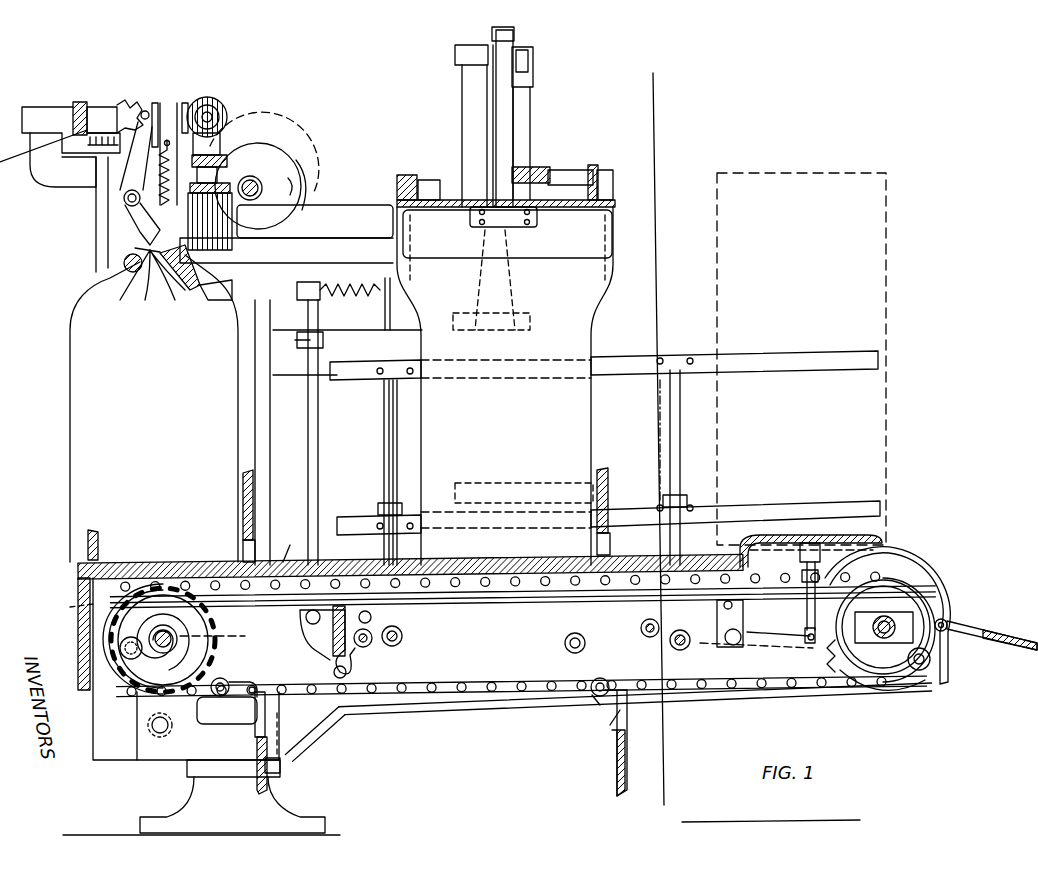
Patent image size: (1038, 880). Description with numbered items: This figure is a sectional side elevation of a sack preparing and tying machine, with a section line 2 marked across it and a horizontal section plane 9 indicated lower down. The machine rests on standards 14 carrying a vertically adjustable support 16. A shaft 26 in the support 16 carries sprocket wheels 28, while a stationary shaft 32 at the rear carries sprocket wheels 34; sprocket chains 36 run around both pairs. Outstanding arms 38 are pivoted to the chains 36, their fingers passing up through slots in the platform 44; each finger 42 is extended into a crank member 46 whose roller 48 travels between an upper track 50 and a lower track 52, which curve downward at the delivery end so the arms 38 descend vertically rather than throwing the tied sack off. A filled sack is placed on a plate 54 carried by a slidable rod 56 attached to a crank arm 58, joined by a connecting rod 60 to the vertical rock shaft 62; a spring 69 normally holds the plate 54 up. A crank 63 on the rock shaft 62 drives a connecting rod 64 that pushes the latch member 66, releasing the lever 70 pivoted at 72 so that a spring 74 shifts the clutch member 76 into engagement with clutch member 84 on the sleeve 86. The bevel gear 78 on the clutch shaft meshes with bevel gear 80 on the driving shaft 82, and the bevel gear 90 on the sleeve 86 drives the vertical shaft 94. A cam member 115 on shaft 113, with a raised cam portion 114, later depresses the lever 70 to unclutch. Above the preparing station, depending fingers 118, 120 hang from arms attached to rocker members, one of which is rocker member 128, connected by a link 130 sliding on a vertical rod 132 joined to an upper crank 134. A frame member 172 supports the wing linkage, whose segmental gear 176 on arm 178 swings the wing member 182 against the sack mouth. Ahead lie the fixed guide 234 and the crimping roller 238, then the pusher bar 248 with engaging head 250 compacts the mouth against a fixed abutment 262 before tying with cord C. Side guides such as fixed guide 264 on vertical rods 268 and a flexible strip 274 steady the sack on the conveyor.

The section line 2 is at (654, 439).
The conveyor chain 9 is at (100, 645).
The standards 14 is at (268, 798).
The support 16 is at (152, 752).
The shaft 26 is at (168, 632).
The sprocket wheels 28 is at (217, 649).
The stationary shaft 32 is at (900, 618).
The sprocket wheels 34 is at (895, 575).
The sprocket chains 36 is at (455, 703).
The outstanding arms 38 is at (243, 518).
The finger 42 is at (950, 625).
The platform 44 is at (78, 570).
The crank members 46 is at (963, 653).
The rollers 48 is at (917, 672).
The upper track 50 is at (482, 599).
The lower track 52 is at (575, 604).
The plate 54 is at (875, 540).
The slidable rod 56 is at (806, 608).
The crank arm 58 is at (762, 650).
The connecting rod 60 is at (528, 609).
The vertical rock shaft 62 is at (318, 490).
The crank 63 is at (340, 275).
The connecting rod 64 is at (245, 300).
The latch member 66 is at (200, 280).
The spring 69 is at (350, 296).
The lever 70 is at (137, 170).
The pivot 72 is at (128, 203).
The spring 74 is at (225, 175).
The clutch member 76 is at (152, 110).
The bevel gear 78 is at (190, 103).
The bevel gear 80 is at (226, 108).
The driving shaft 82 is at (213, 117).
The clutch member 84 is at (128, 105).
The sleeve 86 is at (103, 112).
The bevel gear 90 is at (80, 102).
The shaft 94 is at (125, 262).
The shaft 113 is at (262, 178).
The raised cam portion 114 is at (310, 160).
The cam member 115 is at (298, 180).
The depending finger 118 is at (420, 178).
The depending finger 120 is at (610, 185).
The rocker member 128 is at (428, 205).
The link 130 is at (560, 172).
The vertical rod 132 is at (522, 110).
The upper crank 134 is at (533, 75).
The frame member 172 is at (455, 55).
The segmental gear 176 is at (515, 34).
The arm 178 is at (514, 130).
The wing member 182 is at (590, 225).
The fixed guide 234 is at (385, 205).
The crimping roller 238 is at (215, 212).
The pusher bar 248 is at (290, 255).
The engaging head 250 is at (152, 262).
The fixed abutment 262 is at (130, 268).
The fixed guide 264 is at (805, 370).
The vertical rods 268 is at (388, 425).
The flexible strip 274 is at (527, 497).
The cord C is at (135, 248).